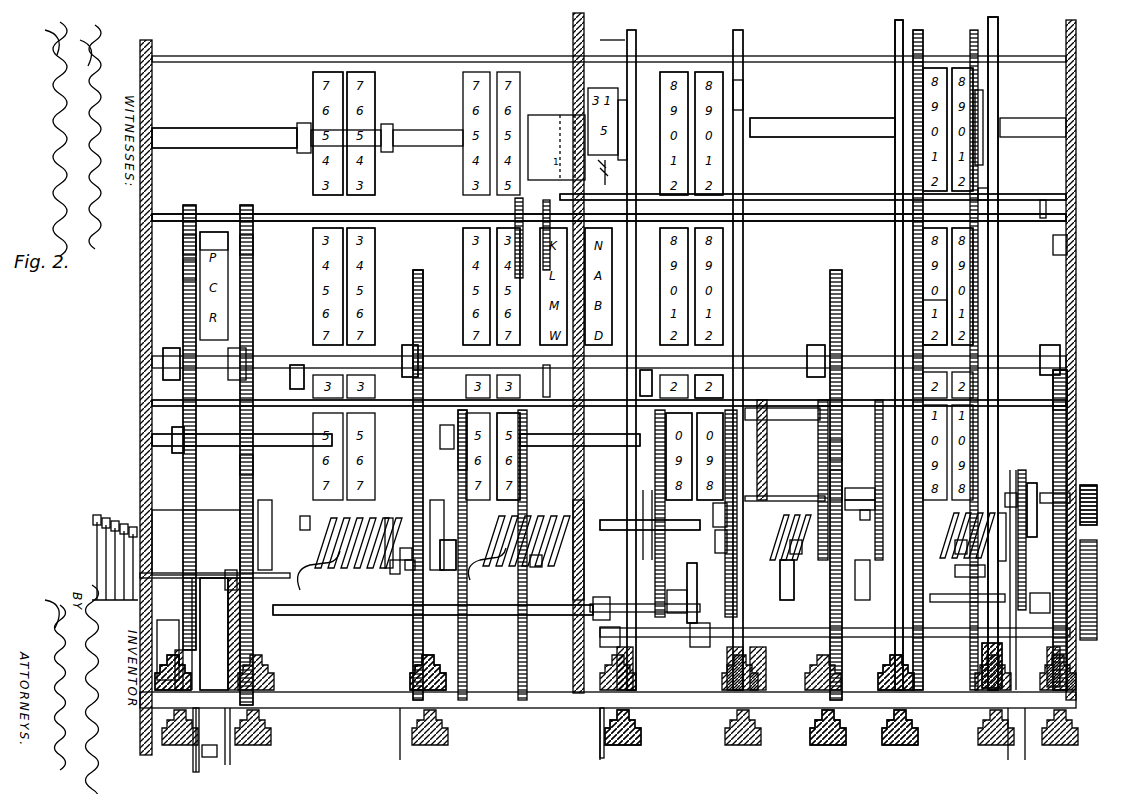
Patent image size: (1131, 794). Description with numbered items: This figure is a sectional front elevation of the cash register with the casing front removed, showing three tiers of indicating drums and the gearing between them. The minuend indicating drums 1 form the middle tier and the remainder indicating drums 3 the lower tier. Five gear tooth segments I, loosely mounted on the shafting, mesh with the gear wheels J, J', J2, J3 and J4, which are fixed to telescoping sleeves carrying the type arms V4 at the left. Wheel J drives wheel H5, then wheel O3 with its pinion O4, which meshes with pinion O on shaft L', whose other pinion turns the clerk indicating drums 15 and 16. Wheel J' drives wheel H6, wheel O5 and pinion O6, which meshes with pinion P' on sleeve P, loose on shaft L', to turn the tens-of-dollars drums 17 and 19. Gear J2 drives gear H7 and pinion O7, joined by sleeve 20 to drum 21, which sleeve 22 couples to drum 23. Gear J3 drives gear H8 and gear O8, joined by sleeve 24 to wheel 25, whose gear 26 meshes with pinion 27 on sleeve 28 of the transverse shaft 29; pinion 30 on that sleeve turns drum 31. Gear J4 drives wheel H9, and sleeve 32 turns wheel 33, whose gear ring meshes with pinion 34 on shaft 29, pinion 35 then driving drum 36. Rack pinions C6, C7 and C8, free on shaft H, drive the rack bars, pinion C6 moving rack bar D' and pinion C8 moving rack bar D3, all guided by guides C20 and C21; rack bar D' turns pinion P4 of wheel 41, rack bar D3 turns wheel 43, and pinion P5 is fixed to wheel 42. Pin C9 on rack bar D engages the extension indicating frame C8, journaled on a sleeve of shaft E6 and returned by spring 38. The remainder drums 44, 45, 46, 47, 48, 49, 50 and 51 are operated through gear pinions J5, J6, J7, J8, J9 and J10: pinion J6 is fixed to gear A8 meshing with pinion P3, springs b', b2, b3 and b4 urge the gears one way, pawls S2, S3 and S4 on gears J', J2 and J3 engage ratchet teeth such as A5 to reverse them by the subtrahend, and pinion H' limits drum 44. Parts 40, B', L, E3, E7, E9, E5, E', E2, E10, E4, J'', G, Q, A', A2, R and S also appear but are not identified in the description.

The type arms V4 is at (116, 515).
The pin C9 is at (605, 32).
The rack bar D is at (642, 357).
The numeral strip 40 is at (674, 72).
The indicator wheel 41 is at (708, 72).
The rack bar D' is at (753, 357).
The bar B' is at (886, 354).
The indicator wheel 42 is at (930, 68).
The indicator wheel 43 is at (958, 68).
The rack bar D3 is at (998, 36).
The shaft E6 is at (838, 112).
The minuend indicating drums 1 is at (744, 95).
The extension indicating frame C8 is at (798, 413).
The pinion P3 is at (630, 106).
The spring 38 is at (612, 172).
The lever L is at (997, 127).
The guide C20 is at (813, 184).
The pinion 34 is at (990, 195).
The shaft 29 is at (1043, 200).
The pinion O is at (187, 416).
The shaft L' is at (609, 206).
The pinion P' is at (249, 445).
The sleeve P is at (239, 266).
The pinion 35 is at (315, 206).
The pinion 30 is at (395, 205).
The pinion O4 is at (183, 244).
The wheel O5 is at (214, 238).
The pinion O6 is at (253, 245).
The wheel O3 is at (183, 270).
The drum 36 is at (313, 264).
The drum 31 is at (372, 286).
The pinion O7 is at (416, 468).
The drum 21 is at (465, 250).
The clerk indicating drum 15 is at (518, 286).
The clerk indicating drum 16 is at (604, 248).
The drum 19 is at (662, 253).
The drum 23 is at (723, 255).
The sleeve 28 is at (609, 253).
The gear O8 is at (833, 270).
The pinion 27 is at (913, 230).
The gear 26 is at (923, 258).
The wheel 33 is at (973, 252).
The sleeve 32 is at (1040, 264).
The sleeve 24 is at (882, 355).
The sleeve 20 is at (430, 320).
The sleeve 22 is at (894, 353).
The gear H7 is at (418, 348).
The drum 17 is at (547, 286).
The pinion P5 is at (646, 370).
The gear H8 is at (825, 345).
The wheel 25 is at (923, 318).
The wheel H9 is at (1052, 345).
The wheel H5 is at (172, 348).
The wheel H6 is at (250, 356).
The collar E3 is at (290, 380).
The rack E7 is at (460, 410).
The pinion P4 is at (553, 380).
The shaft E9 is at (609, 389).
The remainder indicating drums 3 is at (723, 390).
The rack E5 is at (1053, 392).
The shaft E' is at (242, 435).
The collar E2 is at (195, 430).
The rack part E10 is at (253, 468).
The rack part E4 is at (842, 456).
The pinion H' is at (580, 448).
The drum 44 is at (663, 475).
The drum 45 is at (540, 475).
The drum 46 is at (723, 470).
The drum 47 is at (526, 531).
The gear A8 is at (303, 510).
The drum 51 is at (358, 531).
The drum 49 is at (385, 518).
The drum 48 is at (967, 525).
The drum 50 is at (998, 520).
The gear wheel J is at (194, 531).
The gear wheel J' is at (260, 528).
The gear J2 is at (434, 500).
The gear J3 is at (844, 482).
The gear J4 is at (1038, 497).
The gear pinion J5 is at (319, 578).
The pinion J6 is at (487, 570).
The gear pinion J7 is at (640, 540).
The gear pinion J8 is at (703, 593).
The lever J'' is at (792, 580).
The gear J9 is at (990, 585).
The gear J10 is at (1080, 560).
The spring b' is at (371, 574).
The spring b2 is at (469, 559).
The spring b3 is at (794, 560).
The spring b4 is at (962, 557).
The pawl S2 is at (268, 672).
The pawl S3 is at (403, 559).
The pawl S4 is at (856, 513).
The ratchet teeth A5 is at (441, 552).
The guide C21 is at (592, 550).
The shaft G is at (520, 615).
The rod Q is at (214, 634).
The gear tooth segments I is at (183, 638).
The gear A' is at (628, 707).
The gear A2 is at (561, 710).
The shaft H is at (608, 713).
The ratchet R is at (217, 750).
The rod S is at (198, 748).
The rack pinion C6 is at (635, 736).
The rack pinion C7 is at (905, 742).